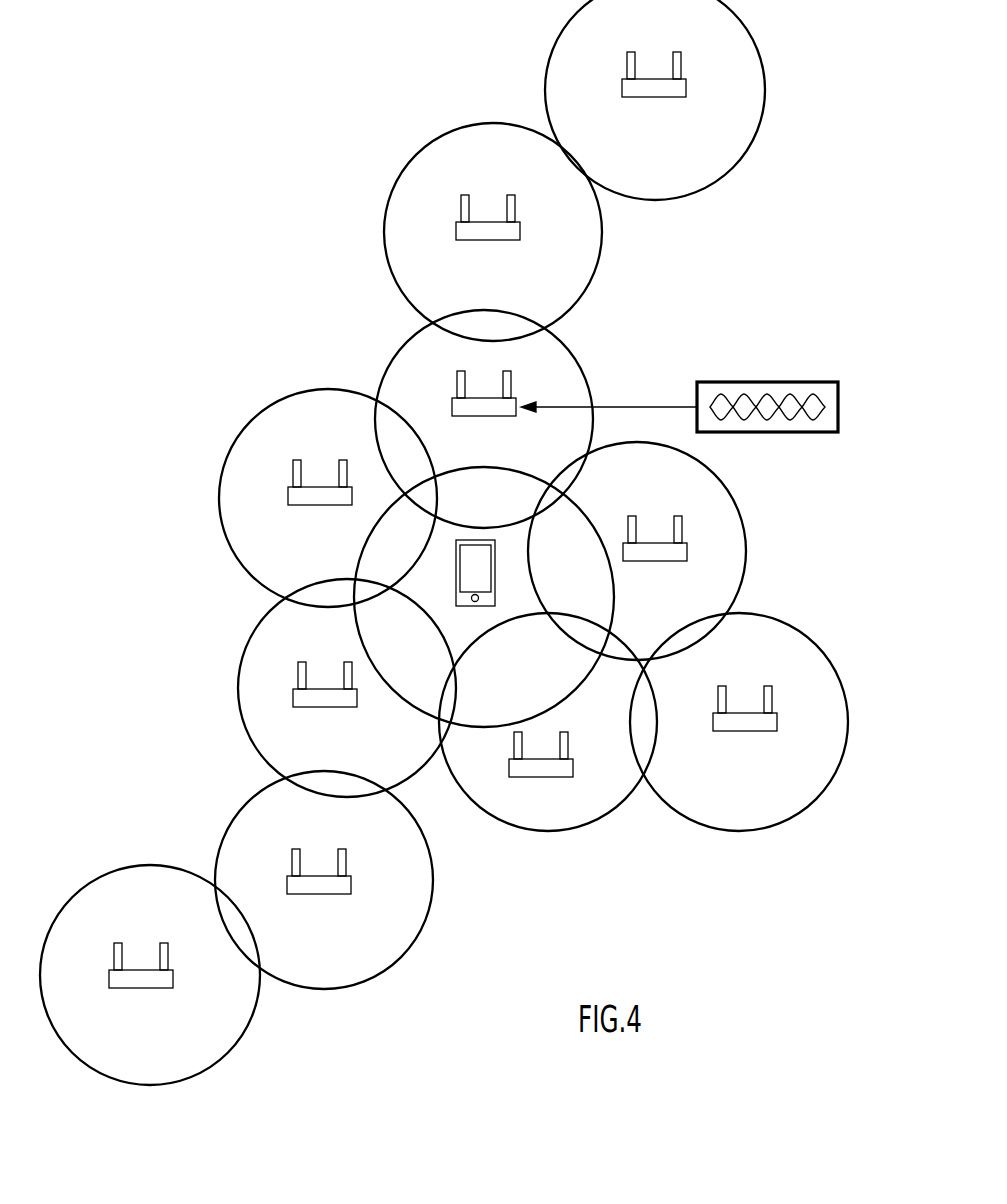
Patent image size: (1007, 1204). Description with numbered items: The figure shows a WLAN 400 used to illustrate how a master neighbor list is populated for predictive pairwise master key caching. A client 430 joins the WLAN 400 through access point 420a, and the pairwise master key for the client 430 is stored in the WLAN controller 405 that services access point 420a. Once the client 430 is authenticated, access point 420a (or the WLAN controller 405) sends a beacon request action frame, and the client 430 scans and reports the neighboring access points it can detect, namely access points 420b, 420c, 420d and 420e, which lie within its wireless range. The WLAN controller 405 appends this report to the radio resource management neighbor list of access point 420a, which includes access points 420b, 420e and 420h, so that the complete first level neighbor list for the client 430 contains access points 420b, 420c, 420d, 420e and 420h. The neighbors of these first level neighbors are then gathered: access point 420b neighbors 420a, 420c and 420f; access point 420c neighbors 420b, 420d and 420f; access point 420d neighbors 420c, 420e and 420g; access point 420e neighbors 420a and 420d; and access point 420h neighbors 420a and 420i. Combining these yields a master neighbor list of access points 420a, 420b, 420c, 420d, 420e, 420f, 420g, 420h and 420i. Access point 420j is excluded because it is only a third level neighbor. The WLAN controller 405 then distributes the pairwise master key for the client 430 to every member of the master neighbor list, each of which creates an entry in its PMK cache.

The WLAN 400 is at (230, 264).
The WLAN controller 405 is at (787, 380).
The access point 420a is at (464, 416).
The access point 420b is at (635, 561).
The access point 420c is at (521, 777).
The access point 420d is at (305, 707).
The access point 420e is at (300, 505).
The access point 420f is at (725, 731).
The access point 420g is at (299, 894).
The access point 420h is at (468, 240).
The access point 420i is at (634, 97).
The access point 420j is at (121, 988).
The client 430 is at (455, 556).